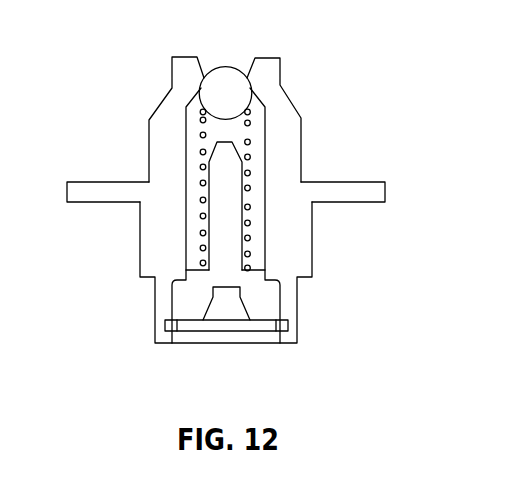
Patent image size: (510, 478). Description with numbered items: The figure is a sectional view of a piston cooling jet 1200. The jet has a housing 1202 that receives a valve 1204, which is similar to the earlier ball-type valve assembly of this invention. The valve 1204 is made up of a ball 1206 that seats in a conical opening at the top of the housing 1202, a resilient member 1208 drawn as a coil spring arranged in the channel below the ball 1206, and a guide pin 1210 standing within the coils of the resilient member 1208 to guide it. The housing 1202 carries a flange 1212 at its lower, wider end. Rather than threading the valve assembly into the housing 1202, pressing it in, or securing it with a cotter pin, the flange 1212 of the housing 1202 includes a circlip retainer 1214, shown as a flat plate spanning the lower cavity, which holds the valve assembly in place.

The piston cooling jet 1200 is at (245, 201).
The housing 1202 is at (292, 158).
The valve 1204 is at (135, 150).
The ball 1206 is at (227, 67).
The resilient member 1208 is at (203, 233).
The guide pin 1210 is at (262, 302).
The flange 1212 is at (367, 182).
The circlip retainer 1214 is at (193, 323).